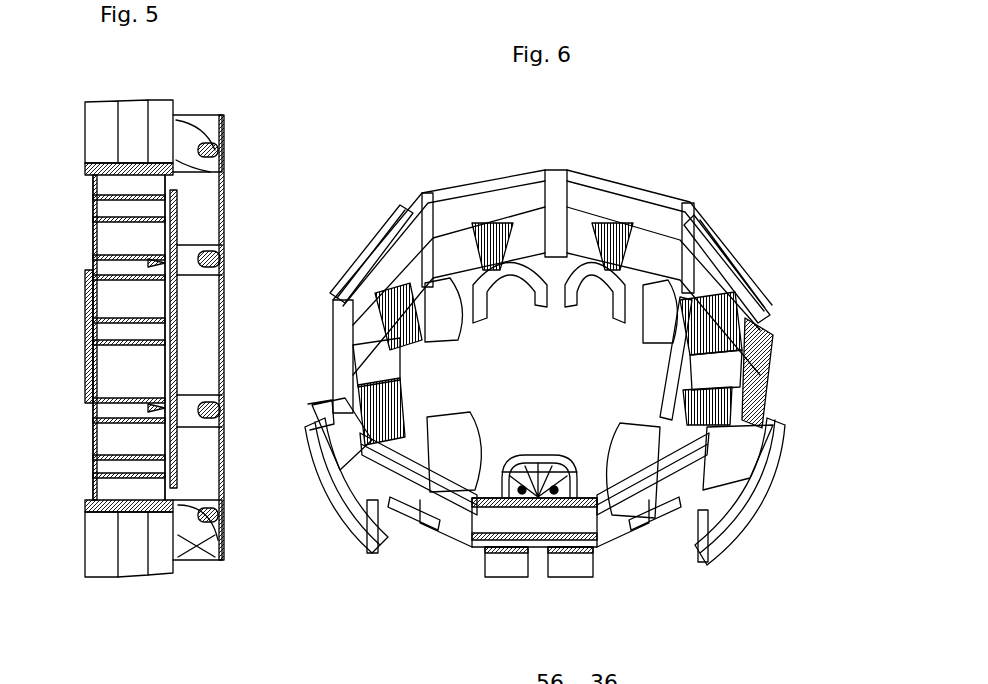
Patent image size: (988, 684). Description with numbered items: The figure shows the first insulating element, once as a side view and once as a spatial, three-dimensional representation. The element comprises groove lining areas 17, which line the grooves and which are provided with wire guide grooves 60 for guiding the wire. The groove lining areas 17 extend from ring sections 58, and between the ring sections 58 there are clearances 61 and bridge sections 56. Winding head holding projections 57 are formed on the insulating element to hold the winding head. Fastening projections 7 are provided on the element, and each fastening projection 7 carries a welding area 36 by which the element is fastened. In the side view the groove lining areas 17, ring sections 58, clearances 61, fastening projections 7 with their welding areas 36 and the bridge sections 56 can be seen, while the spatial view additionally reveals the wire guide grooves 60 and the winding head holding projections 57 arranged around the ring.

In FIG. 5, the fastening projection 7 is at (160, 110).
In FIG. 6, the fastening projection 7 is at (735, 515).
In FIG. 5, the groove lining area 17 is at (112, 242).
In FIG. 6, the groove lining area 17 is at (520, 265).
In FIG. 5, the welding area 36 is at (140, 102).
In FIG. 6, the welding area 36 is at (757, 503).
In FIG. 5, the bridge section 56 is at (180, 137).
In FIG. 6, the bridge section 56 is at (750, 430).
In FIG. 6, the winding head holding projection 57 is at (528, 290).
In FIG. 5, the ring section 58 is at (197, 203).
In FIG. 6, the ring section 58 is at (480, 200).
In FIG. 6, the wire guide groove 60 is at (700, 346).
In FIG. 5, the clearance 61 is at (203, 260).
In FIG. 6, the clearance 61 is at (693, 215).